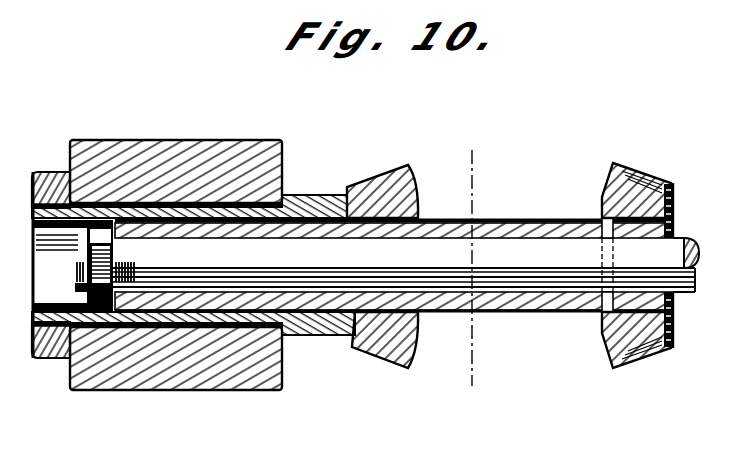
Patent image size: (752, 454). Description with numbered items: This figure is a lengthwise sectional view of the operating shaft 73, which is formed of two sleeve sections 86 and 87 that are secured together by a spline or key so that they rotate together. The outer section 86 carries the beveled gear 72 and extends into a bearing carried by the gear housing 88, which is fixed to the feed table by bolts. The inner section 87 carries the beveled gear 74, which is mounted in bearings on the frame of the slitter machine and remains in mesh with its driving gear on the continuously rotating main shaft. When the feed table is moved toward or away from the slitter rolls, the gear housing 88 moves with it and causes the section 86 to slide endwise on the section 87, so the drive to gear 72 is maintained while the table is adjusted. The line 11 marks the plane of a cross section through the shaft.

The section line 11- 11 is at (474, 268).
The beveled gear 72 is at (385, 364).
The shaft 73 is at (542, 316).
The beveled gear 74 is at (645, 354).
The sleeve section 86 is at (327, 340).
The sleeve section 87 is at (534, 208).
The gear housing 88 is at (175, 390).